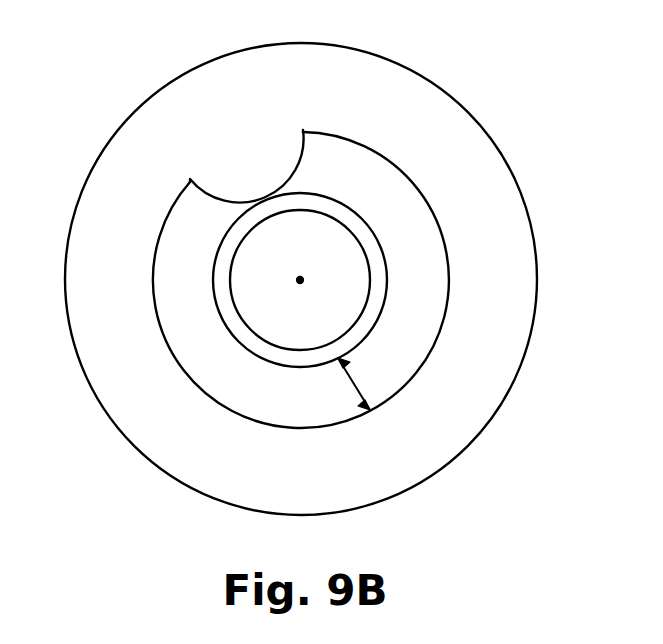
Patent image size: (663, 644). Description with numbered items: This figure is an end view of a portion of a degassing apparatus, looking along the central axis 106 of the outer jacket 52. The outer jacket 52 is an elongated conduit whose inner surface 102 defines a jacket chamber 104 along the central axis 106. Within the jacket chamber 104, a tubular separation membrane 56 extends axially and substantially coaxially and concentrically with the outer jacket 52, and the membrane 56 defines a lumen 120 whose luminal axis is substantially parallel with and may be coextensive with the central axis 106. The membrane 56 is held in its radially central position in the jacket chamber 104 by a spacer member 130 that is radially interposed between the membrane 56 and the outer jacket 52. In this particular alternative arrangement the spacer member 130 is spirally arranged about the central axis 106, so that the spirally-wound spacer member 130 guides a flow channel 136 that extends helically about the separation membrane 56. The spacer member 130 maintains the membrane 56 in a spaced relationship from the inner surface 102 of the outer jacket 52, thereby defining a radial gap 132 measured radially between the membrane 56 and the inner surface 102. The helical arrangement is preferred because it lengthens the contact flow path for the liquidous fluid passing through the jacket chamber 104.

The outer jacket 52 is at (468, 128).
The spacer member 130 is at (303, 167).
The flow channel 136 is at (197, 218).
The inner surface 102 is at (437, 347).
The lumen 120 is at (250, 284).
The membrane 56 is at (298, 360).
The central axis 106 is at (305, 278).
The jacket chamber 104 is at (197, 357).
The radial gap 132 is at (357, 383).